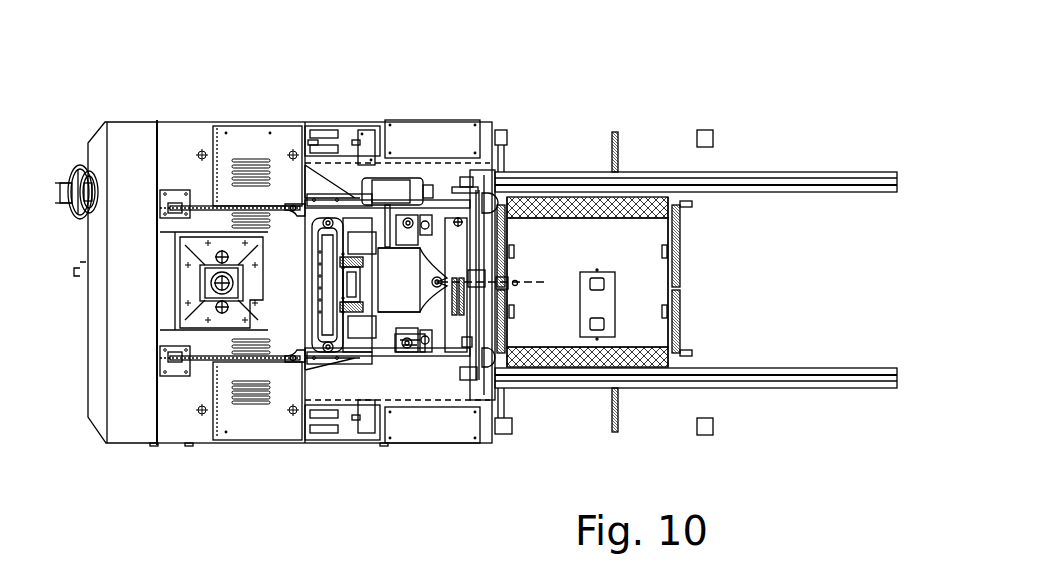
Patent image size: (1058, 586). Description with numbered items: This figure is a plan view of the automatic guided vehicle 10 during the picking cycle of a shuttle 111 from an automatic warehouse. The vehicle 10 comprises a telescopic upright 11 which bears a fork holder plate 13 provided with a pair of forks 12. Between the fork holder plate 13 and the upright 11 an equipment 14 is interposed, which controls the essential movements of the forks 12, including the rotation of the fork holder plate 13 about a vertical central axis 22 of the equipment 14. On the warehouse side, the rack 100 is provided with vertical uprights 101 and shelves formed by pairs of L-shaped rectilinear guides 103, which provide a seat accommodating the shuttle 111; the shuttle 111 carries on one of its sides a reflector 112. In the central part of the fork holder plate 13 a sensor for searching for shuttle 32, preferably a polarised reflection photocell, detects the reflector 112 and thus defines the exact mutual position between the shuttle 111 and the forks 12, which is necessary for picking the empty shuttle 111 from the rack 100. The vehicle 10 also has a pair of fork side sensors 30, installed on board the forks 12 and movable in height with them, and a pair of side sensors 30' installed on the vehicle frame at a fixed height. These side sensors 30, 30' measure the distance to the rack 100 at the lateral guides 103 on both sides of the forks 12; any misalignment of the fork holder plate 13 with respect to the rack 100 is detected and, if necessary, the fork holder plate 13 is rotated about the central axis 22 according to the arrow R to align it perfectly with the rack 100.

The automatic guided vehicle 10 is at (275, 115).
The telescopic upright 11 is at (305, 360).
The fork holder plate 13 is at (470, 365).
The equipment 14 is at (407, 367).
The central axis 22 is at (436, 282).
The fork side sensors 30 is at (452, 274).
The side sensors 30' is at (360, 281).
The sensor for searching for shuttle 32 is at (480, 287).
The arrow R is at (420, 372).
The racks 100 is at (806, 168).
The vertical uprights 101 is at (508, 132).
The rectilinear guides 103 is at (556, 186).
The shuttle 111 is at (630, 284).
The reflector 112 is at (510, 285).
The forks 12 is at (683, 205).